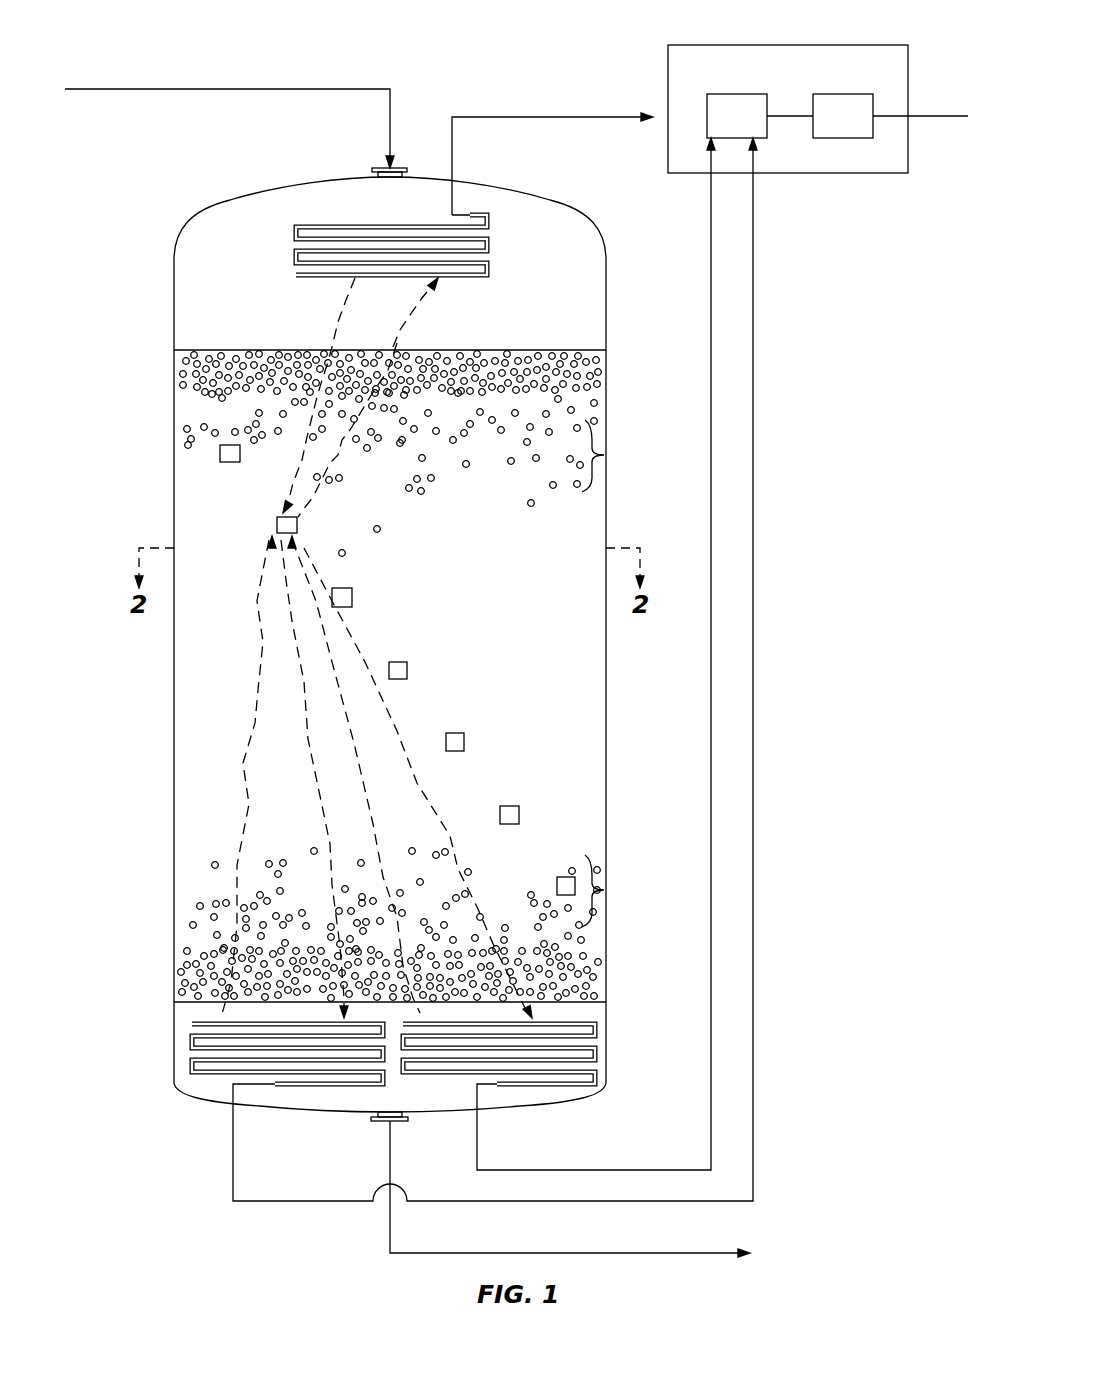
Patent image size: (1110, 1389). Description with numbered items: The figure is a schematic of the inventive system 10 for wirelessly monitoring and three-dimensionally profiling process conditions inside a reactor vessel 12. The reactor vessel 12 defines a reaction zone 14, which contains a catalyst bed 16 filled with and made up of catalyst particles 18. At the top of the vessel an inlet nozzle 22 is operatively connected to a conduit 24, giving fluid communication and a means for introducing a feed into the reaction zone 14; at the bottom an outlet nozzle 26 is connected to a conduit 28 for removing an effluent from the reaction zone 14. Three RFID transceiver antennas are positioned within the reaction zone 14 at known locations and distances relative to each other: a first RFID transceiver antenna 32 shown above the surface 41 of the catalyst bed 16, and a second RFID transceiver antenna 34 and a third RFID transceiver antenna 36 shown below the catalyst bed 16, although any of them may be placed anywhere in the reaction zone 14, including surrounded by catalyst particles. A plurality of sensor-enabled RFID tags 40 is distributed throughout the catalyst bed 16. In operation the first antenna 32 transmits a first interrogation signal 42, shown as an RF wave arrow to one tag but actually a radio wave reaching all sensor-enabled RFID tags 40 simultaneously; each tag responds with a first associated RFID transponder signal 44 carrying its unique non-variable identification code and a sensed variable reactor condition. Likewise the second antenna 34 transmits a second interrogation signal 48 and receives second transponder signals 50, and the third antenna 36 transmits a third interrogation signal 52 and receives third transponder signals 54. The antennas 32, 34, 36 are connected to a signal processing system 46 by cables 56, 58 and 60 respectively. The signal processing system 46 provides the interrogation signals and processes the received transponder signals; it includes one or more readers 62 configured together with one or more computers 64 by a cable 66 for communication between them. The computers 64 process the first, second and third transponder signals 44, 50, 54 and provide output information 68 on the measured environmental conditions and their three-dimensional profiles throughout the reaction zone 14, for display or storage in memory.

The system 10 is at (131, 42).
The reactor vessel 12 is at (195, 222).
The reaction zone 14 is at (193, 305).
The catalyst bed 16 is at (506, 564).
The catalyst particles 18 is at (604, 455).
The inlet nozzle 22 is at (372, 168).
The conduit 24 is at (248, 89).
The outlet nozzle 26 is at (373, 1120).
The conduit 28 is at (540, 1253).
The first RFID transceiver antenna 32 is at (365, 225).
The second RFID transceiver antenna 34 is at (305, 1086).
The third RFID transceiver antenna 36 is at (527, 1086).
The sensor-enabled RFID tag 40 is at (230, 463).
The surface 41 is at (192, 348).
The first interrogation signal 42 is at (340, 318).
The first associated RFID transponder signal 44 is at (315, 486).
The signal processing system 46 is at (872, 45).
The second interrogation signal 48 is at (244, 830).
The second associated RFID transponder signal 50 is at (322, 818).
The third interrogation signal 52 is at (383, 888).
The third associated RFID transponder signal 54 is at (415, 788).
The cable 56 is at (498, 117).
The cable 58 is at (753, 1134).
The cable 60 is at (711, 1134).
The reader 62 is at (735, 94).
The computer 64 is at (845, 94).
The cable 66 is at (785, 116).
The output information 68 is at (925, 116).